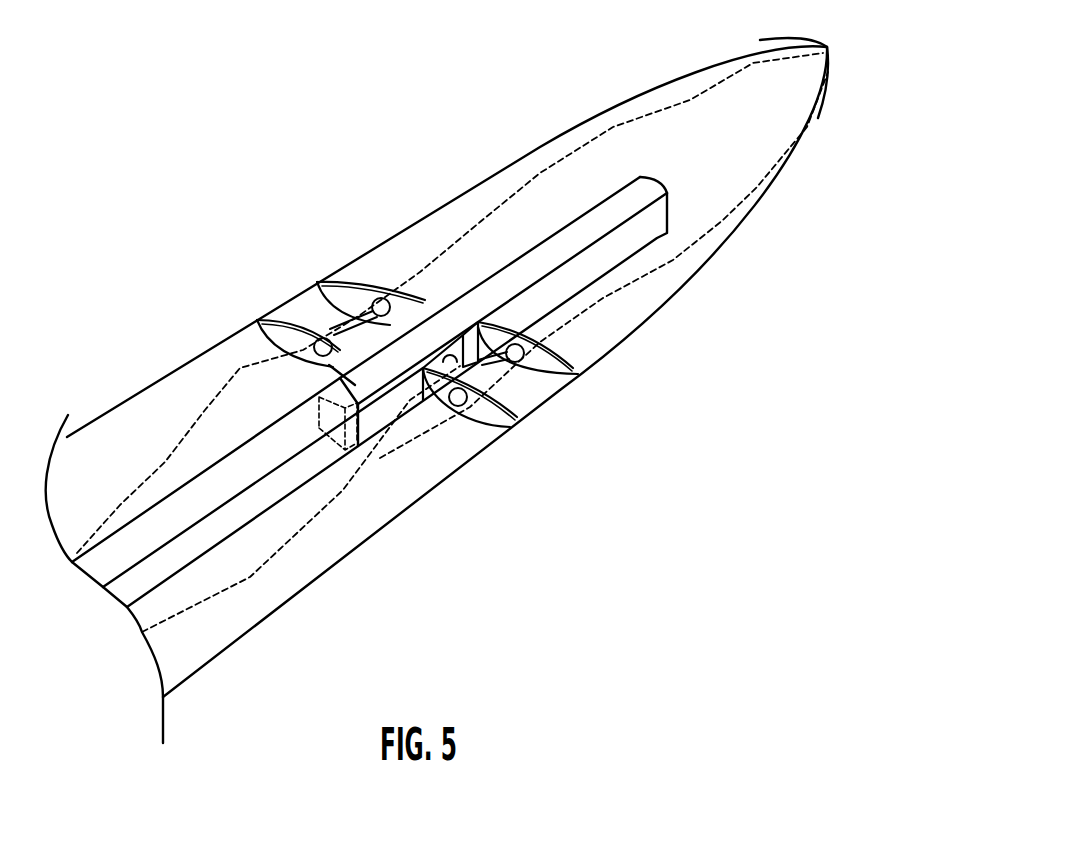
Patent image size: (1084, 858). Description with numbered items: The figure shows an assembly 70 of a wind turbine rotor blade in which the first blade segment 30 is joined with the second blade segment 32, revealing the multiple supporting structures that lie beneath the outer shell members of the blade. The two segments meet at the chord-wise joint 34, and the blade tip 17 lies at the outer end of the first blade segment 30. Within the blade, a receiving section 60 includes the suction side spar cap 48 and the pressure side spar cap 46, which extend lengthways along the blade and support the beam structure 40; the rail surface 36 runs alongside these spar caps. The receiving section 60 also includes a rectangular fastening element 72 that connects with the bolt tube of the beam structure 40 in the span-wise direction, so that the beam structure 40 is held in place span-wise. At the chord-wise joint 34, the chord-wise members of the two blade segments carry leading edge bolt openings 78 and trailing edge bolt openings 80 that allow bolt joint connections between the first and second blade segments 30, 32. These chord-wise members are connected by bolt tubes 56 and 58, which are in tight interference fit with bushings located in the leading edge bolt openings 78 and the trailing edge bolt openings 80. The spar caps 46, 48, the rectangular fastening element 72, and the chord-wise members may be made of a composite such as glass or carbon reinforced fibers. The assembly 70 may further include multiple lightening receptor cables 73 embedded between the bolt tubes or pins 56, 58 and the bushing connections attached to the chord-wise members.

The nose tip 17 is at (831, 44).
The first blade segment 30 is at (618, 108).
The second blade segment 32 is at (107, 427).
The chord-wise joint 34 is at (312, 252).
The guide rail 36 is at (187, 500).
The beam structure 40 is at (590, 232).
The pressure side spar cap 46 is at (193, 563).
The suction side spar cap 48 is at (138, 540).
The bolt tube 56 is at (509, 345).
The bolt tube 58 is at (378, 304).
The receiving section 60 is at (340, 483).
The assembly 70 is at (170, 227).
The rectangular fastening element 72 is at (320, 427).
The lightening receptor cables 73 is at (607, 133).
The leading edge bolt openings 78 is at (520, 416).
The trailing edge bolt openings 80 is at (327, 283).